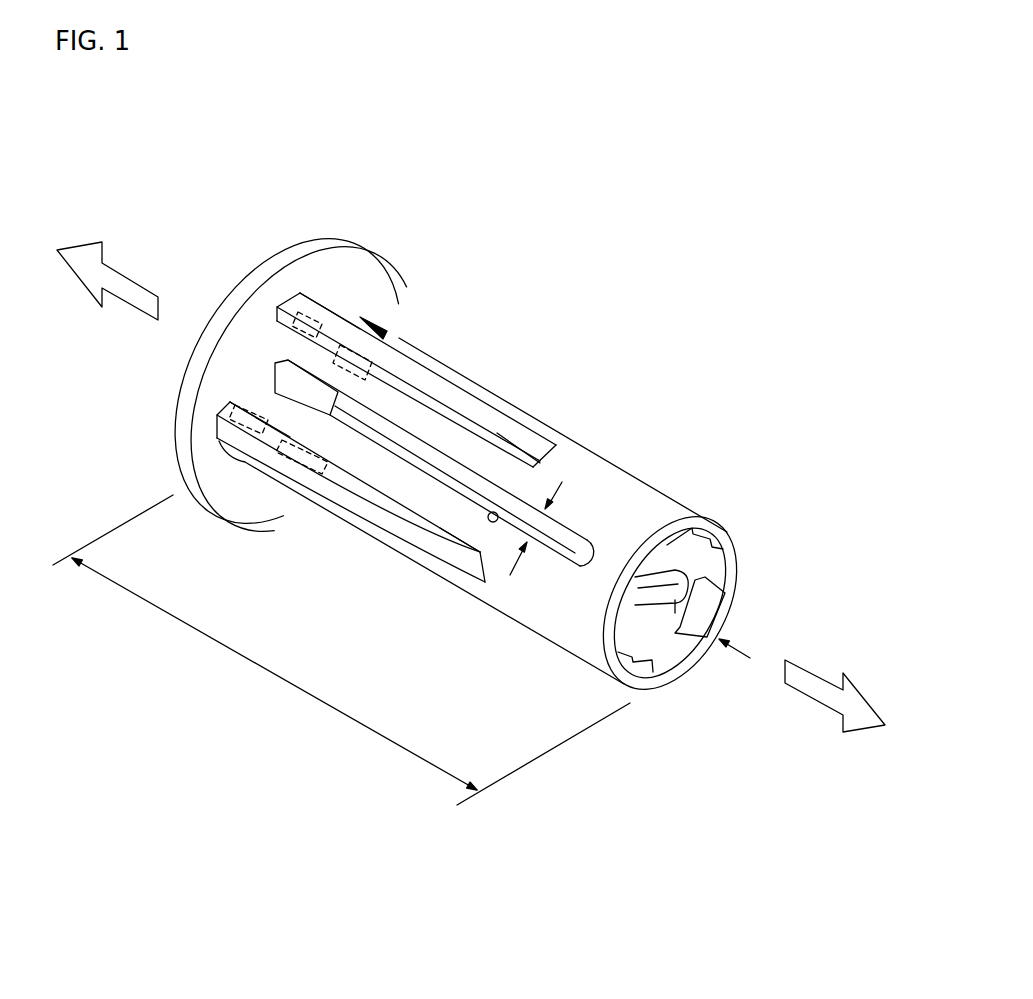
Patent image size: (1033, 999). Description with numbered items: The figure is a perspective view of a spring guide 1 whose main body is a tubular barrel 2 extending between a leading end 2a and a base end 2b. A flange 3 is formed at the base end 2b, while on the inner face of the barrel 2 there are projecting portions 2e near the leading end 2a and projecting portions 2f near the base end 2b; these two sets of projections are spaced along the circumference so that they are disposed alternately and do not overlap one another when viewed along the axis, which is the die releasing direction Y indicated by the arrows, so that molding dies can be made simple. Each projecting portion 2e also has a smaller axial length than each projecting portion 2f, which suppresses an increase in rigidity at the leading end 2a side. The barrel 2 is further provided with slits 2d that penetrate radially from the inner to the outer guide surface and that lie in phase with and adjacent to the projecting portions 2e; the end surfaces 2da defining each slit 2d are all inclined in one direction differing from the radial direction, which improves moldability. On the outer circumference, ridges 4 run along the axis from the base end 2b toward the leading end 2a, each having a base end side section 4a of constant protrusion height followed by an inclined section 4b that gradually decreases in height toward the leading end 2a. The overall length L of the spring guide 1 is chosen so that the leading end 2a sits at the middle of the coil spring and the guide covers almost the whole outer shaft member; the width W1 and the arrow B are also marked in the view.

The spring guide 1 is at (637, 313).
The barrel 2 is at (585, 440).
The leading end 2a is at (612, 650).
The base end 2b is at (247, 355).
The slit 2d is at (553, 530).
The end surface 2da is at (489, 522).
The projecting portion 2e is at (645, 560).
The projecting portion 2f is at (323, 307).
The flange 3 is at (292, 280).
The ridge 4 is at (455, 366).
The base end side section 4a is at (415, 367).
The inclined section 4b is at (495, 427).
The length L is at (341, 650).
The width W1 is at (536, 523).
The direction B is at (746, 659).
The die releasing direction Y is at (469, 475).